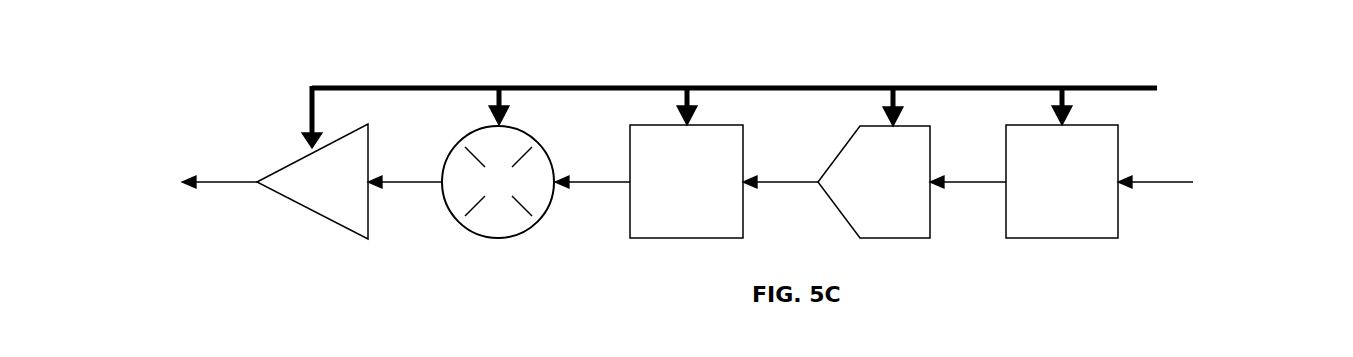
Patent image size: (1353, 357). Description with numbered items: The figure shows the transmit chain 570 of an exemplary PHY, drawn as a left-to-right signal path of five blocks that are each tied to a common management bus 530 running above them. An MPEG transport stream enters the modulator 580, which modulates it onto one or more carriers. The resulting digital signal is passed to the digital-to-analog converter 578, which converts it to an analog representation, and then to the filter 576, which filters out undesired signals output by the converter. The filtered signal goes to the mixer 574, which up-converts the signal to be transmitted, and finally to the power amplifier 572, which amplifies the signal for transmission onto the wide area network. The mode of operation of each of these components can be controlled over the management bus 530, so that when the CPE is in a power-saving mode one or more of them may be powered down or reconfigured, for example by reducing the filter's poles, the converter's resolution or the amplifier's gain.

The transmit chain 570 is at (222, 98).
The management bus 530 is at (837, 87).
The power amplifier module 572 is at (347, 192).
The mixer module 574 is at (515, 192).
The filter module 576 is at (704, 202).
The digital-to-analog converter 578 is at (890, 204).
The modulator 580 is at (1079, 202).